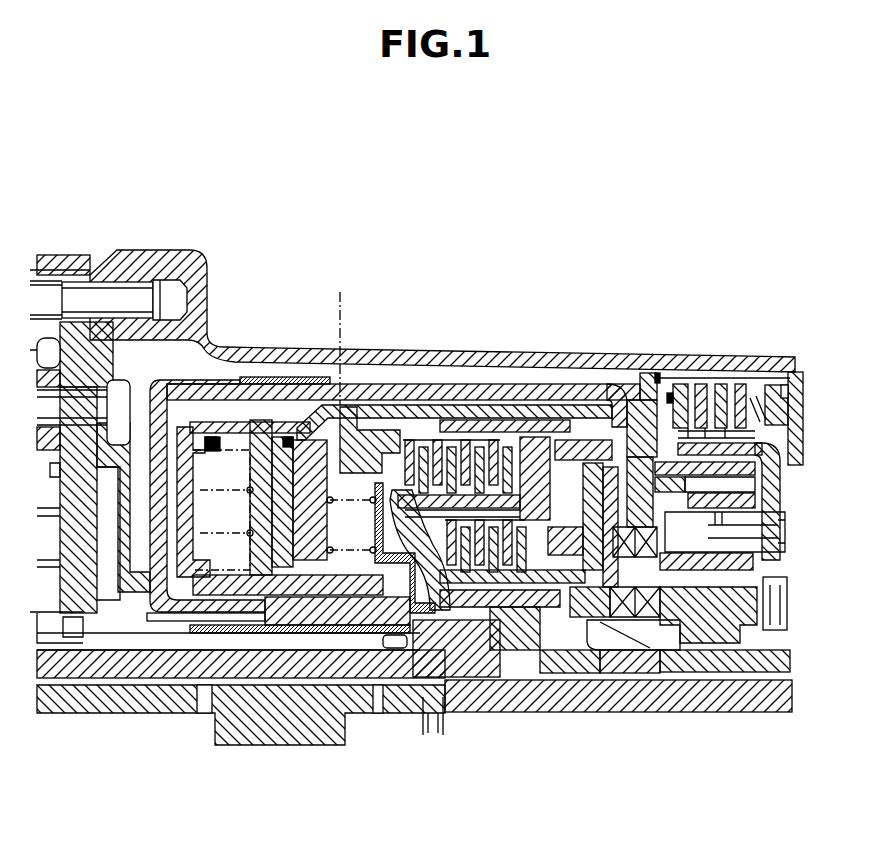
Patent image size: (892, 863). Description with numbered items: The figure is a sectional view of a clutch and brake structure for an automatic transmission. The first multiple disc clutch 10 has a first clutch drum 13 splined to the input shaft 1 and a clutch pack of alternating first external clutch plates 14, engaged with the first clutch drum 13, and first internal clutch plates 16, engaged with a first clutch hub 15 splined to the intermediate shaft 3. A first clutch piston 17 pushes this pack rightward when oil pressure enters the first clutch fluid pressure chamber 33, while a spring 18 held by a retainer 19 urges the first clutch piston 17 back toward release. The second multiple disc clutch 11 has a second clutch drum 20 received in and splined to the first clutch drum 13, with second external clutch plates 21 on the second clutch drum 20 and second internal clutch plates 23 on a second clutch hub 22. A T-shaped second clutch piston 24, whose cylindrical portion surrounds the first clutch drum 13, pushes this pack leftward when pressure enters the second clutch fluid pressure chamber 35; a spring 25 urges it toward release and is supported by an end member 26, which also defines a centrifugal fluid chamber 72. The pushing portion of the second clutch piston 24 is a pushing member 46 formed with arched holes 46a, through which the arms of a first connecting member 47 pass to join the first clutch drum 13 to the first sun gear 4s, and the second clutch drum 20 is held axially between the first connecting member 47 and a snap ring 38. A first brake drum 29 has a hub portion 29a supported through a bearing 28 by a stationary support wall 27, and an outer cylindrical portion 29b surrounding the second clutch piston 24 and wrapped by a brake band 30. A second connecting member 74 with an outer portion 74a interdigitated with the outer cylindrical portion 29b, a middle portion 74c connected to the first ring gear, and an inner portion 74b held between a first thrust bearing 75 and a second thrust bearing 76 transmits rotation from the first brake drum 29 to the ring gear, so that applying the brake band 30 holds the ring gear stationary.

The input shaft 1 is at (410, 655).
The intermediate shaft 3 is at (750, 690).
The first sun gear 4s is at (740, 608).
The first multiple disc clutch 10 is at (412, 440).
The second multiple disc clutch 11 is at (580, 622).
The first clutch drum 13 is at (460, 650).
The first external clutch plates 14 is at (440, 445).
The first clutch hub 15 is at (540, 650).
The first internal clutch plates 16 is at (465, 450).
The first clutch piston 17 is at (357, 420).
The spring 18 is at (340, 332).
The retainer 19 is at (400, 428).
The second clutch drum 20 is at (590, 438).
The second external clutch plates 21 is at (550, 438).
The second clutch hub 22 is at (485, 575).
The second internal clutch plates 23 is at (508, 578).
The second clutch piston 24 is at (262, 435).
The spring 25 is at (240, 422).
The end member 26 is at (180, 335).
The stationary support wall 27 is at (340, 700).
The bearing 28 is at (243, 620).
The first brake drum 29 is at (150, 388).
The hub portion 29a is at (197, 617).
The outer cylindrical portion 29b is at (505, 440).
The brake band 30 is at (290, 385).
The first clutch fluid pressure chamber 33 is at (368, 642).
The second clutch fluid pressure chamber 35 is at (292, 630).
The snap ring 38 is at (520, 437).
The pushing member 46 is at (710, 362).
The arched holes 46a is at (662, 400).
The first connecting member 47 is at (683, 400).
The centrifugal fluid chamber 72 is at (160, 600).
The second connecting member 74 is at (665, 440).
The outer portion 74a is at (632, 400).
The inner portion 74b is at (655, 655).
The middle portion 74c is at (770, 470).
The first thrust bearing 75 is at (600, 660).
The second thrust bearing 76 is at (690, 655).